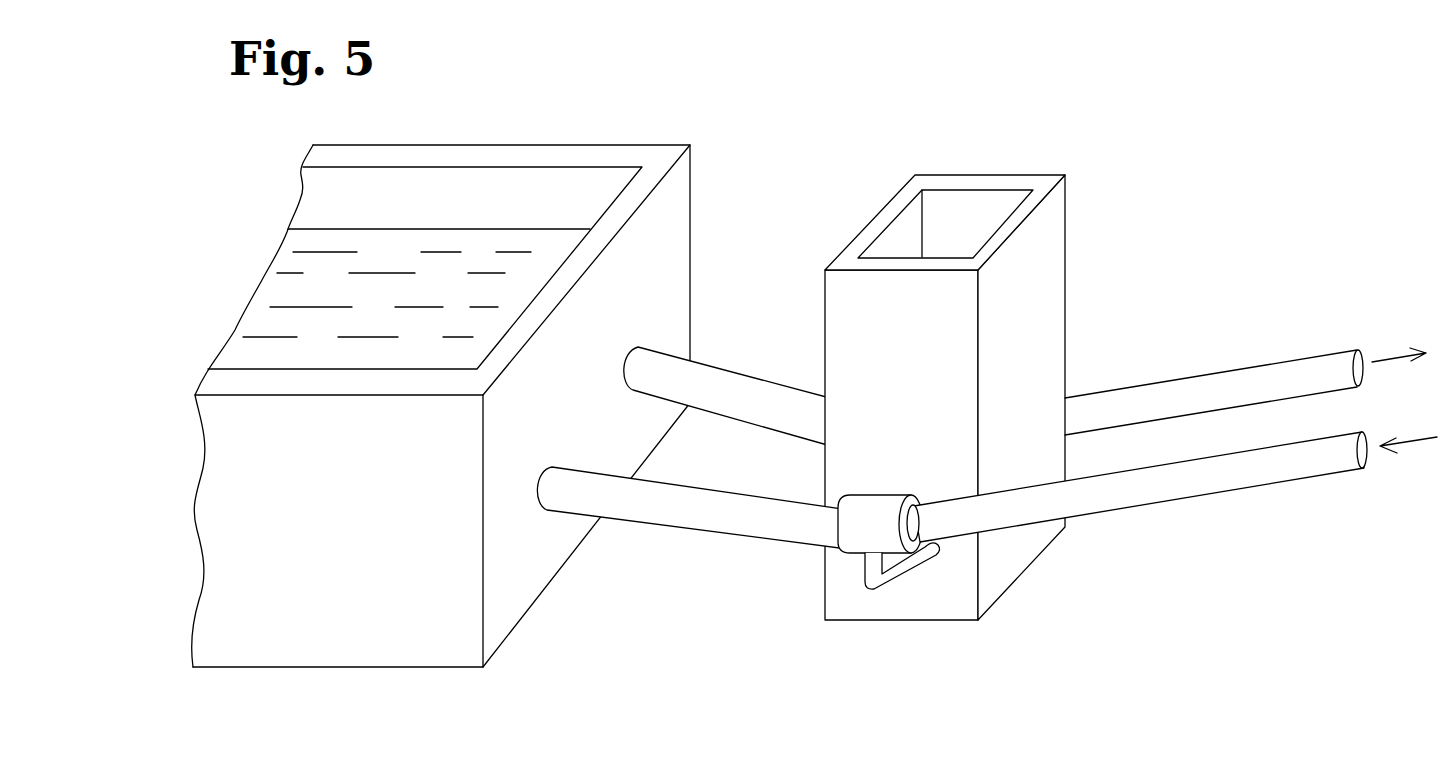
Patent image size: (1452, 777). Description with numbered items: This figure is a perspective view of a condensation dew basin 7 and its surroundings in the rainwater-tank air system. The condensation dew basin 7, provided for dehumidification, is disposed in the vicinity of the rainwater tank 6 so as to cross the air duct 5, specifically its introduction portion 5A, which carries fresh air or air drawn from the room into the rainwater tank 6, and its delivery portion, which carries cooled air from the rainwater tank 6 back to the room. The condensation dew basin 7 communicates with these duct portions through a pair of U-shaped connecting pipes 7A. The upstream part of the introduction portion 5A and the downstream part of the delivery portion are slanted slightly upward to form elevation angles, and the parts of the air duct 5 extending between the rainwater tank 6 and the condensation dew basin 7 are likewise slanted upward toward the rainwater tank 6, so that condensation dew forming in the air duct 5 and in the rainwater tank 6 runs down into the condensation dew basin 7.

The air duct 5 is at (698, 518).
The introduction portion of the air duct 5A is at (1190, 483).
The rainwater tank 6 is at (668, 247).
The condensation dew basin 7 is at (1057, 248).
The U-shaped connecting pipes 7A is at (877, 588).